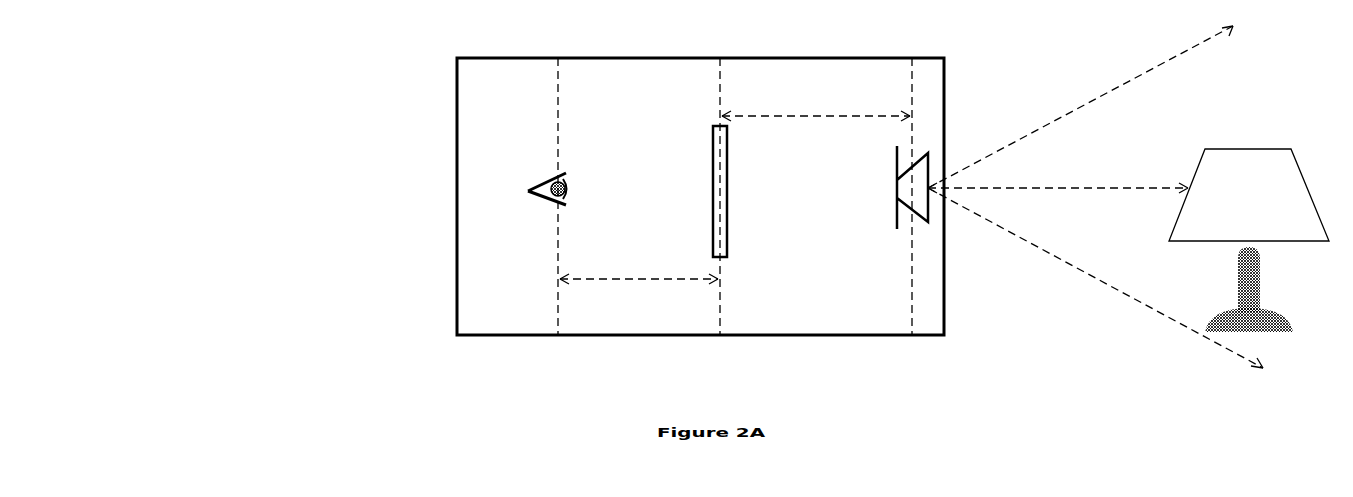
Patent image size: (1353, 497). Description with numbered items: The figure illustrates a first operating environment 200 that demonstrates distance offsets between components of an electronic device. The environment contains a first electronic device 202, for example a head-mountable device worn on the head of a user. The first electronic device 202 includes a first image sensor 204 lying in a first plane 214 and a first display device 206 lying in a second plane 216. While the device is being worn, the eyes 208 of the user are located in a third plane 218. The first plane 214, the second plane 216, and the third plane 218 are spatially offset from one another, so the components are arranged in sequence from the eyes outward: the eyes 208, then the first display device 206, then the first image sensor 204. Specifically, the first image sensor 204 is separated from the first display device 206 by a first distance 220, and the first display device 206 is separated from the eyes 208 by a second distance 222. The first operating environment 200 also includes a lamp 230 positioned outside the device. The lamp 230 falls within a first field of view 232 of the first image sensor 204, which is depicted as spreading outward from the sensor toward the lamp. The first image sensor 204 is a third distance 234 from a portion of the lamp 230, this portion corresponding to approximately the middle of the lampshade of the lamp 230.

The first operating environment 200 is at (223, 68).
The first electronic device 202 is at (457, 70).
The first image sensor 204 is at (895, 215).
The first display device 206 is at (727, 182).
The eyes 208 is at (568, 187).
The first plane 214 is at (912, 74).
The second plane 216 is at (720, 78).
The third plane 218 is at (558, 75).
The first distance 220 is at (870, 116).
The second distance 222 is at (640, 279).
The lamp 230 is at (1205, 150).
The first field of view 232 is at (1125, 290).
The third distance 234 is at (1115, 187).